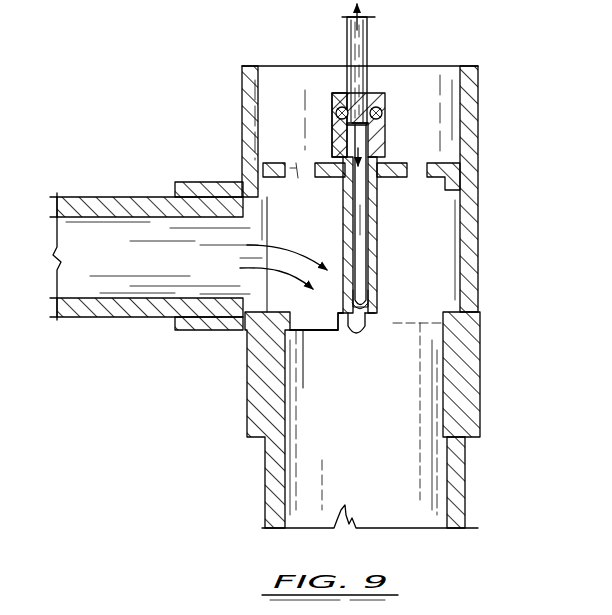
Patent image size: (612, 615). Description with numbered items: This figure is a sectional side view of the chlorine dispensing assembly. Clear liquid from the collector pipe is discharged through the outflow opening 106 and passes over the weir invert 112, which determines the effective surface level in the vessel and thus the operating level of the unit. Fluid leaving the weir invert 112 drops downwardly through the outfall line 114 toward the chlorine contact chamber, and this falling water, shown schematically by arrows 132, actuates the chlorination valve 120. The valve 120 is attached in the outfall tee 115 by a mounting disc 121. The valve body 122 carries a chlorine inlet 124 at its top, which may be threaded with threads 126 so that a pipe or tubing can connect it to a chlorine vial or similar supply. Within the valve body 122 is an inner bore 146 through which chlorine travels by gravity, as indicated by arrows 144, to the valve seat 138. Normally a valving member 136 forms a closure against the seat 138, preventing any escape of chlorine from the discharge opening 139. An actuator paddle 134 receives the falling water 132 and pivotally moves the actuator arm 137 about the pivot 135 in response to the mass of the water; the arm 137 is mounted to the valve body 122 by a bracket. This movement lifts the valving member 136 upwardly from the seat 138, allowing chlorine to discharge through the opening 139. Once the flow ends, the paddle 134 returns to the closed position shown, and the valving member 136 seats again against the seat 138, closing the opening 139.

The outflow opening 106 is at (138, 197).
The weir invert 112 is at (252, 290).
The outfall line 114 is at (465, 470).
The outfall tee 115 is at (478, 290).
The chlorination valve 120 is at (482, 136).
The mounting disc 121 is at (318, 160).
The valve body 122 is at (378, 192).
The chlorine inlet 124 is at (368, 30).
The threads 126 is at (388, 121).
The arrows indicating flow of water 132 is at (265, 243).
The actuator paddle 134 is at (306, 368).
The pivot 135 is at (343, 311).
The valving member 136 is at (370, 302).
The actuator arm 137 is at (348, 336).
The valve seat 138 is at (378, 315).
The discharge opening 139 is at (368, 327).
The arrows indicating chlorine flow 144 is at (368, 218).
The inner bore 146 is at (368, 268).